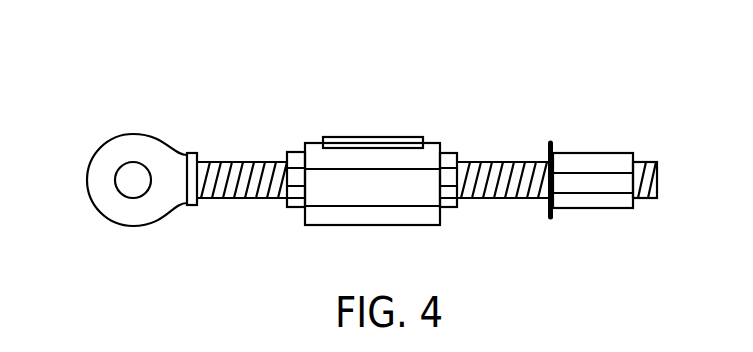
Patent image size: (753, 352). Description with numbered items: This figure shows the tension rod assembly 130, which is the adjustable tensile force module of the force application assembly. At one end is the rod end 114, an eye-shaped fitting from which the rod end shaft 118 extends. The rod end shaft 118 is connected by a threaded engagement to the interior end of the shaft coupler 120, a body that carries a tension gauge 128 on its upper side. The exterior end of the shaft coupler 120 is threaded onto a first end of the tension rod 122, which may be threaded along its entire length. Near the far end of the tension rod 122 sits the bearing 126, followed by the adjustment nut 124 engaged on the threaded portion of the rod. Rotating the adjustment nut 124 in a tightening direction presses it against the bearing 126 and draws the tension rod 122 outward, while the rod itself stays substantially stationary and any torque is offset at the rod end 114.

The rod end 114 is at (127, 148).
The rod end shaft 118 is at (227, 158).
The shaft coupler 120 is at (408, 187).
The tension gauge 128 is at (359, 146).
The tension rod 122 is at (518, 162).
The bearing 126 is at (551, 143).
The adjustment nut 124 is at (583, 180).
The tension rod assembly 130 is at (263, 268).